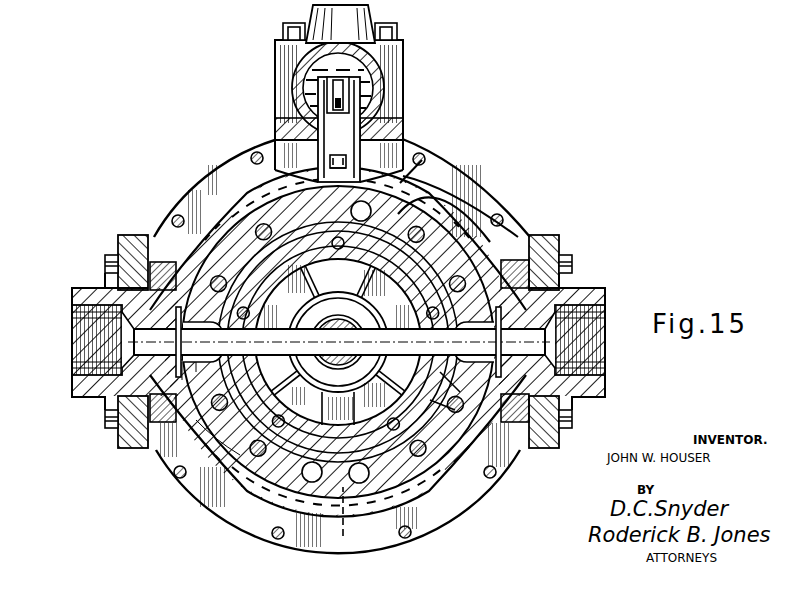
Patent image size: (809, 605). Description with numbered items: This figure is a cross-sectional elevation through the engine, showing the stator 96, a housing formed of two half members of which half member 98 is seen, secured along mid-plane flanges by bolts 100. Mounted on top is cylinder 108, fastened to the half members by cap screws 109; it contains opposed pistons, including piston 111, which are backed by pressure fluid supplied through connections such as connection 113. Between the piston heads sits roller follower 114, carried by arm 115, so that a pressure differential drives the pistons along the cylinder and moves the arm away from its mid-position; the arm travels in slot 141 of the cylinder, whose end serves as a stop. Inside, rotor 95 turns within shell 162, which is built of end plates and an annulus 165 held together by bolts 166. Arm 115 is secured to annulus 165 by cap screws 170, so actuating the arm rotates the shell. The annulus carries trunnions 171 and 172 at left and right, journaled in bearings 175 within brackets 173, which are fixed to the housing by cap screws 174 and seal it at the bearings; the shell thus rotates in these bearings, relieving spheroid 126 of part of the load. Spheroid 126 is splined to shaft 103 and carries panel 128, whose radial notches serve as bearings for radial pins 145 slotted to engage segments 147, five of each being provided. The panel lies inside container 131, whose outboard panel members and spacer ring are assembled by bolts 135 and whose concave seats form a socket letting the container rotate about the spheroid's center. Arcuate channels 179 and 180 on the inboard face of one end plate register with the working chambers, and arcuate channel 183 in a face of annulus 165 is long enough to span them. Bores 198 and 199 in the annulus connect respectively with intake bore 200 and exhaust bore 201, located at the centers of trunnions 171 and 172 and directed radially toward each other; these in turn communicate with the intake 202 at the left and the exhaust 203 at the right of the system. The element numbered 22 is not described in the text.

The shaft 22 is at (137, 338).
The rotor 95 is at (410, 230).
The stator 96 is at (430, 175).
The half member 98 is at (455, 519).
The bolts 100 is at (255, 156).
The shaft 103 is at (343, 322).
The cylinder 108 is at (382, 88).
The cap screws 109 is at (399, 30).
The piston 111 is at (352, 66).
The connection 113 is at (352, 22).
The roller follower 114 is at (346, 101).
The arm 115 is at (366, 140).
The spheroid 126 is at (298, 371).
The panel 128 is at (312, 237).
The container 131 is at (470, 445).
The bolts 135 is at (248, 228).
The slot 141 is at (357, 162).
The radial pin 145 is at (372, 470).
The segment 147 is at (306, 468).
The shell 162 is at (482, 209).
The annulus 165 is at (480, 172).
The bolts 166 is at (470, 190).
The cap screws 170 is at (337, 155).
The trunnion 171 is at (112, 284).
The trunnion 172 is at (601, 291).
The brackets 173 is at (140, 234).
The cap screws 174 is at (106, 258).
The bearings 175 is at (163, 262).
The arcuate channel 179 is at (218, 437).
The arcuate channel 180 is at (468, 380).
The arcuate channel 183 is at (342, 519).
The bore 198 is at (203, 330).
The bore 199 is at (500, 330).
The intake bore 200 is at (200, 366).
The exhaust bore 201 is at (461, 396).
The intake 202 is at (76, 292).
The exhaust 203 is at (602, 391).